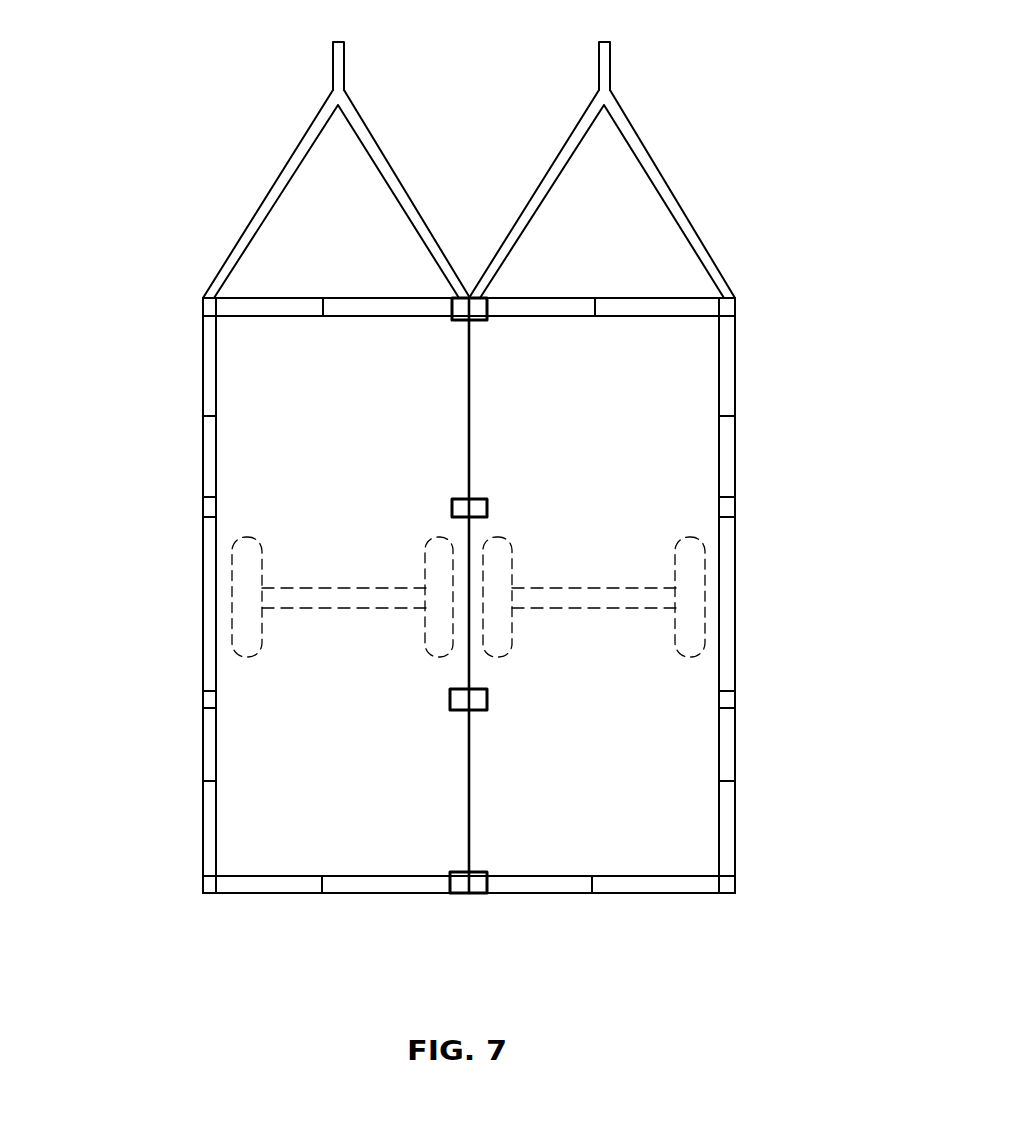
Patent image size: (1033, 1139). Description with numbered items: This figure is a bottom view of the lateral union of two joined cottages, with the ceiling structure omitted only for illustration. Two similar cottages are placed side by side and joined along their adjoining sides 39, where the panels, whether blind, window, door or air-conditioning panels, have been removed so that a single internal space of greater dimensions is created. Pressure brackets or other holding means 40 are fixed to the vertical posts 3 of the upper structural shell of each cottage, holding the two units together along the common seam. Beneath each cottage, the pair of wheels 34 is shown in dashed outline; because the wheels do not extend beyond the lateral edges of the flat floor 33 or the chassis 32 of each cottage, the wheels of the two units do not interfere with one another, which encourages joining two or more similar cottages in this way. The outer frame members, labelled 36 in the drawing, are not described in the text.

The vertical posts 3 is at (473, 298).
The chassis 32 is at (290, 490).
The flat floor 33 is at (362, 708).
The pair of wheels 34 is at (313, 600).
The frame 36 is at (190, 425).
The adjoining sides 39 is at (469, 474).
The pressure brackets or holding means 40 is at (456, 499).